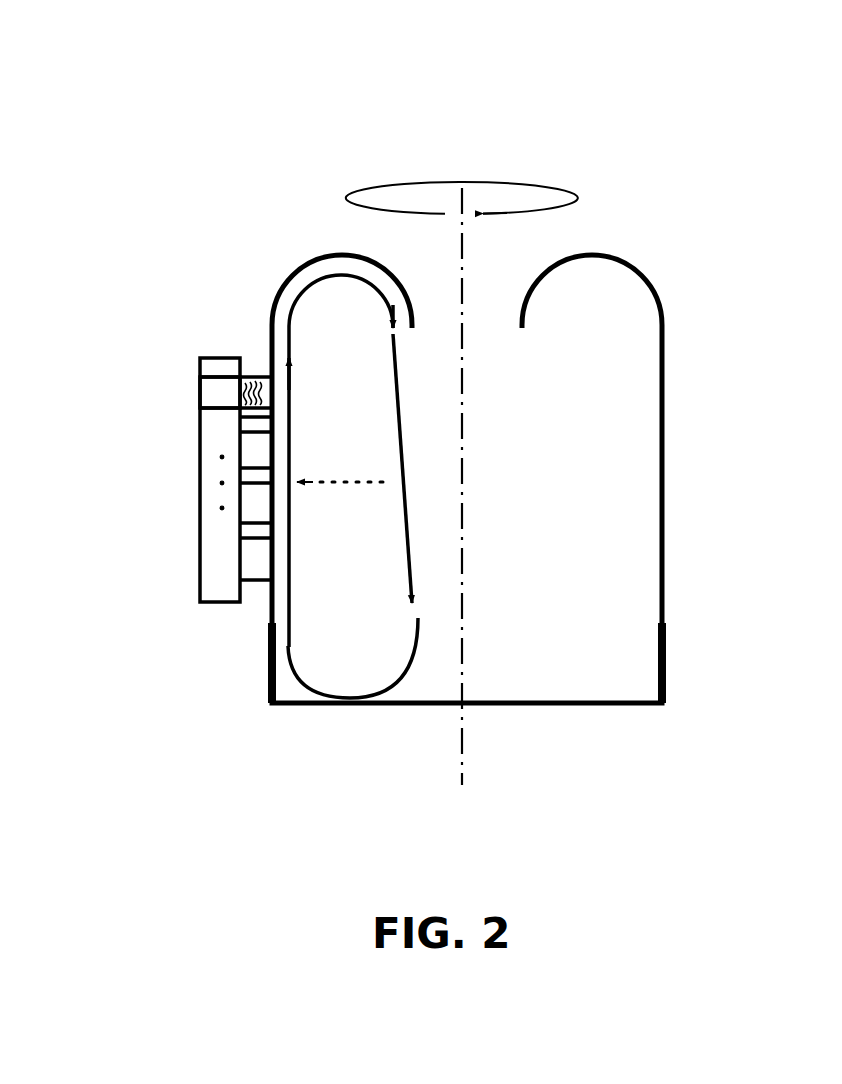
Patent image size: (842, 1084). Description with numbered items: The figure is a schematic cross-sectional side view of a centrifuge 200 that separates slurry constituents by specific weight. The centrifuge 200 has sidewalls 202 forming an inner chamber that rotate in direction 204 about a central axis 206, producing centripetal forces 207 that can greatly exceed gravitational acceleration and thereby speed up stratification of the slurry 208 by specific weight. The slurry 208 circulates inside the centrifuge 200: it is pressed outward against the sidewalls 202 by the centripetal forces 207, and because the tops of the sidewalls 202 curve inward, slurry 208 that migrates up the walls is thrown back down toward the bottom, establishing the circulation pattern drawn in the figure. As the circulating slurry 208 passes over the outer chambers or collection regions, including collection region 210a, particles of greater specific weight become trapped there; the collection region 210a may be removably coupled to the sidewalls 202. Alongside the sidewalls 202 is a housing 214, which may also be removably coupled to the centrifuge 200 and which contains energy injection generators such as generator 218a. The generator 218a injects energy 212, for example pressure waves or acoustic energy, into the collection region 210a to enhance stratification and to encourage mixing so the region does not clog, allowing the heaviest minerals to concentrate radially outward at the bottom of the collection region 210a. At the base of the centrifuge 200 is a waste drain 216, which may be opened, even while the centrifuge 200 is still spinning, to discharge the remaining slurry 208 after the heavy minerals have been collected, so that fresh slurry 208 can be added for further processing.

The centrifuge 200 is at (150, 77).
The sidewalls 202 is at (665, 442).
The direction of rotation 204 is at (542, 180).
The axis 206 is at (465, 750).
The centripetal forces 207 is at (345, 480).
The slurry 208 is at (408, 497).
The collection region 210a is at (258, 372).
The energy 212 is at (253, 417).
The housing 214 is at (200, 353).
The waste drain 216 is at (258, 678).
The energy injection generator 218a is at (217, 387).